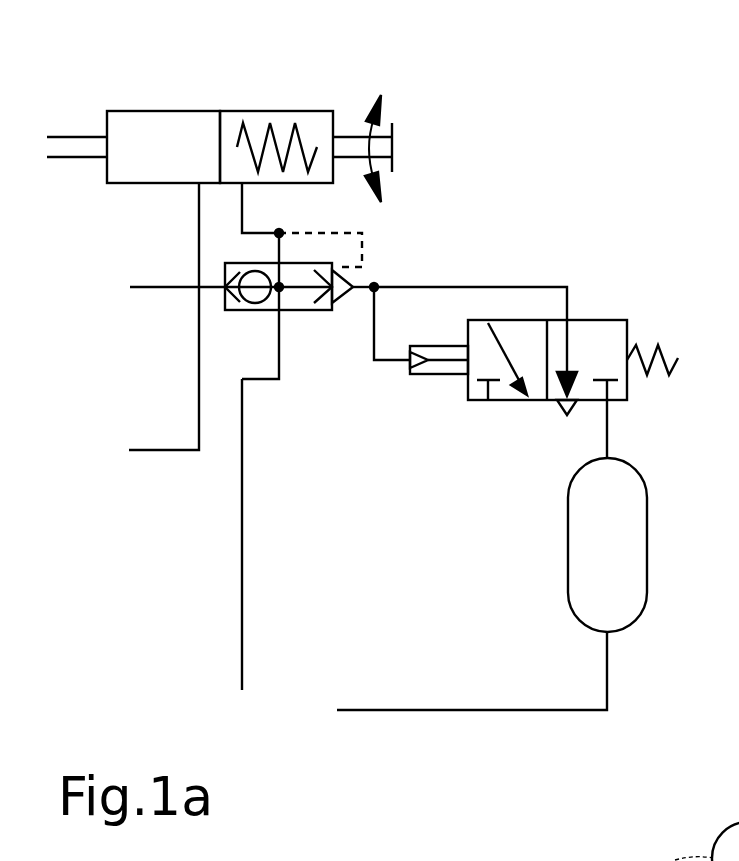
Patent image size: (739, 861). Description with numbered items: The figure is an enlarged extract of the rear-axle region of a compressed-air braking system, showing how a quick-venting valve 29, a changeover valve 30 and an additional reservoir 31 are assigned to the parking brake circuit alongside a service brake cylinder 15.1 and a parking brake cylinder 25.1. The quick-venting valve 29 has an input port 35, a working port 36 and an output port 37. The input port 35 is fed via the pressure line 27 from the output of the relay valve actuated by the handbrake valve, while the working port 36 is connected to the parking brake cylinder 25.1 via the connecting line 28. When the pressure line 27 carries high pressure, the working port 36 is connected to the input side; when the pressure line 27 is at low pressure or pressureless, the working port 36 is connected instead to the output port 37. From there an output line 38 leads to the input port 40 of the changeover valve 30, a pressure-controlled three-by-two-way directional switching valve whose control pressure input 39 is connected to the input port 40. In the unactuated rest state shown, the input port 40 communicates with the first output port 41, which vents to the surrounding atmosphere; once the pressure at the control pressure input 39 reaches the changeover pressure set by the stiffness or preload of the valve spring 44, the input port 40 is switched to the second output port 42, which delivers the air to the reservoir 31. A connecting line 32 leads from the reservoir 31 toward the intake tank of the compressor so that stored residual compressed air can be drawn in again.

The service brake cylinder 15.1 is at (165, 110).
The parking brake cylinder 25.1 is at (280, 125).
The pressure line 27 is at (165, 290).
The connecting line 28 is at (240, 540).
The quick-venting valve 29 is at (227, 268).
The changeover valve 30 is at (520, 432).
The reservoir 31 is at (568, 572).
The connecting line 32 is at (392, 708).
The input port 35 is at (225, 288).
The working port 36 is at (282, 292).
The output port 37 is at (340, 300).
The output line 38 is at (473, 287).
The control pressure input 39 is at (407, 372).
The input port 40 is at (567, 318).
The first output port 41 is at (565, 417).
The second output port 42 is at (610, 402).
The valve spring 44 is at (668, 355).